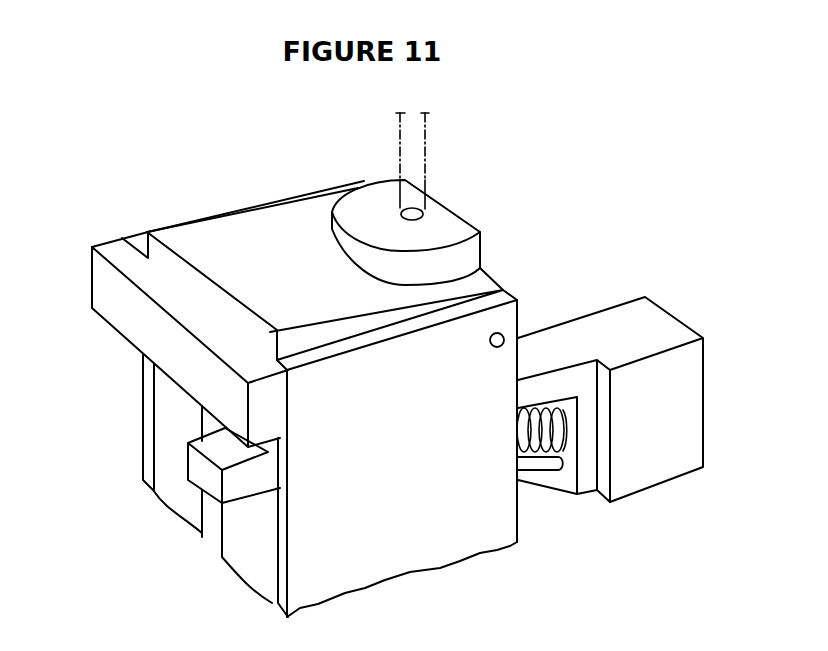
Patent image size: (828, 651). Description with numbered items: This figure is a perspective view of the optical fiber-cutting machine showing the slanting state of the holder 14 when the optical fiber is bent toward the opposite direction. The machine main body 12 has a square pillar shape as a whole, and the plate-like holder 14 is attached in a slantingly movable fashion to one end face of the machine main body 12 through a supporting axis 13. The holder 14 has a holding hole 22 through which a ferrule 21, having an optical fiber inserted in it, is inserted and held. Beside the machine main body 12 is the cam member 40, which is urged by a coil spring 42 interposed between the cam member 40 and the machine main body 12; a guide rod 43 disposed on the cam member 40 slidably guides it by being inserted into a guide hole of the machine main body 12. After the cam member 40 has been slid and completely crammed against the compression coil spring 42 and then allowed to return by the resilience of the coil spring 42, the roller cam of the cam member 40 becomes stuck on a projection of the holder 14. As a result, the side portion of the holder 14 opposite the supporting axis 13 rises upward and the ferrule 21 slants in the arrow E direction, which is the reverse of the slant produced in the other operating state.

The machine main body 12 is at (467, 530).
The supporting axis 13 is at (504, 336).
The holder 14 is at (223, 229).
The ferrule 21 is at (427, 161).
The holding hole 22 is at (452, 214).
The cam member 40 is at (676, 308).
The coil spring 42 is at (550, 400).
The guide rod 43 is at (537, 471).
The arrow E direction E is at (444, 116).